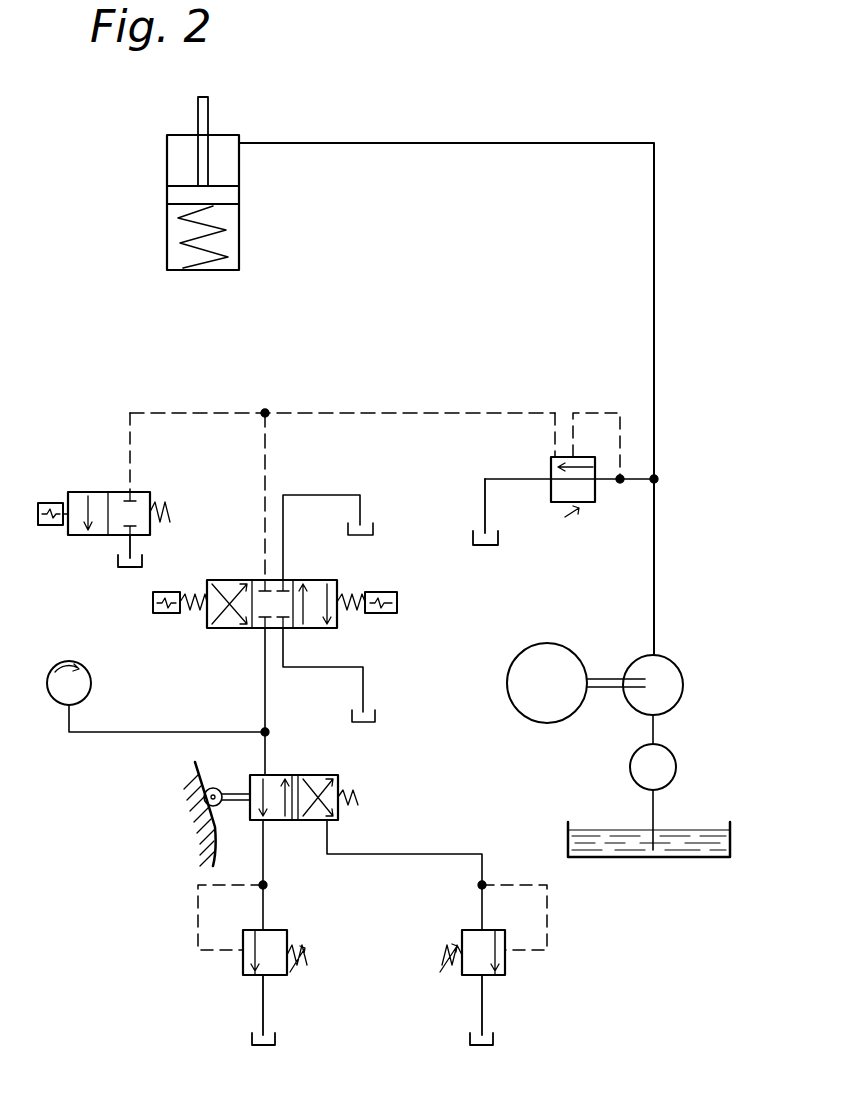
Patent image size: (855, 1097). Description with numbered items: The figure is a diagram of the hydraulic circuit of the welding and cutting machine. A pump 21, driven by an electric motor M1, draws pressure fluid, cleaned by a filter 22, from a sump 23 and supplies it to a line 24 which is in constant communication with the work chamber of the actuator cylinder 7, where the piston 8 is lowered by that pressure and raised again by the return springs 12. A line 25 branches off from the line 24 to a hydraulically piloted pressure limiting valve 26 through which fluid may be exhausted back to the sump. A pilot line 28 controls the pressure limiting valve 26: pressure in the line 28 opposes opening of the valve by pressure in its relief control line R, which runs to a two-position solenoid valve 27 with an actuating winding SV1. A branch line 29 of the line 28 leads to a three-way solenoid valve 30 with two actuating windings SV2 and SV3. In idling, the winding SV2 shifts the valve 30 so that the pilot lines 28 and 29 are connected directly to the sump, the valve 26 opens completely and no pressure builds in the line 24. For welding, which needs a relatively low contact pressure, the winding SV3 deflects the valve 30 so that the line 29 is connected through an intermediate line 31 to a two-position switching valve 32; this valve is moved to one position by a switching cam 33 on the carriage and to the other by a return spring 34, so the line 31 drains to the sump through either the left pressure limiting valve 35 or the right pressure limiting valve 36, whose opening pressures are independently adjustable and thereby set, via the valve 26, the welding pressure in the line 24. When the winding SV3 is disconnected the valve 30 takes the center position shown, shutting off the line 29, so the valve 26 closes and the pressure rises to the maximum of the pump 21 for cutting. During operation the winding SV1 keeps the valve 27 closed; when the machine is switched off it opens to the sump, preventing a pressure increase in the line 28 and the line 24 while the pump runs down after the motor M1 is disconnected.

The actuator cylinder 7 is at (167, 162).
The piston 8 is at (239, 196).
The return springs 12 is at (210, 236).
The pump 21 is at (672, 668).
The filter 22 is at (675, 763).
The sump 23 is at (601, 857).
The line 24 is at (655, 397).
The line 25 is at (634, 482).
The pressure limiting valve 26 is at (551, 497).
The solenoid valve 27 is at (103, 492).
The pilot line 28 is at (178, 413).
The branch line 29 is at (265, 452).
The solenoid valve 30 is at (236, 628).
The intermediate line 31 is at (267, 705).
The switching valve 32 is at (290, 820).
The switching cam 33 is at (195, 830).
The return spring 34 is at (348, 802).
The left pressure limiting valve 35 is at (275, 975).
The right pressure limiting valve 36 is at (485, 975).
The actuating winding SV1 is at (48, 503).
The actuating winding SV2 is at (153, 603).
The actuating winding SV3 is at (397, 605).
The relief control line R is at (596, 413).
The electric motor M1 is at (547, 683).